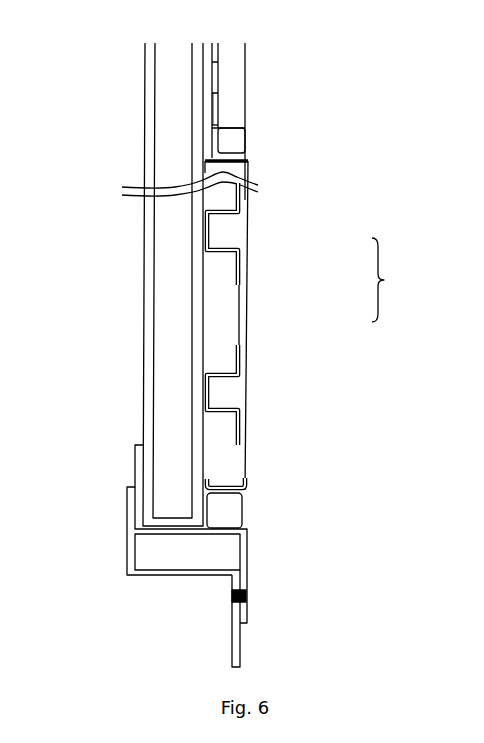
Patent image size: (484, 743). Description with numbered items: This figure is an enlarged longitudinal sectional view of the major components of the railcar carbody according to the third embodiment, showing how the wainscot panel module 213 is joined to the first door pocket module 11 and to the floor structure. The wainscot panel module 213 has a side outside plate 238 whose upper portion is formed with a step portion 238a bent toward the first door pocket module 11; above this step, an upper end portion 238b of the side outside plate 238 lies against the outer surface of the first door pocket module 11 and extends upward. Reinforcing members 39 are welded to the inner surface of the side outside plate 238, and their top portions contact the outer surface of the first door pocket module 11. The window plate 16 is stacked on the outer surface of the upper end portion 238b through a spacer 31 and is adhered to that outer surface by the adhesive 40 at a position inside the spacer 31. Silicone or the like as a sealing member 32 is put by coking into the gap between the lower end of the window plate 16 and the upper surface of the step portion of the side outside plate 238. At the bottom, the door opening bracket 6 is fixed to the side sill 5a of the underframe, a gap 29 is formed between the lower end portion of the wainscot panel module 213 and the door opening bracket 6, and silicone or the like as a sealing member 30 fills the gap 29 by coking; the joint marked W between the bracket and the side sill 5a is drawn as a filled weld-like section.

The first door pocket module 11 is at (143, 283).
The window plate 16 is at (235, 79).
The adhesive 40 is at (217, 72).
The spacer 31 is at (213, 103).
The sealing member 32 is at (236, 143).
The step portion 238a is at (245, 178).
The upper end portion 238b is at (203, 131).
The side outside plate 238 is at (248, 323).
The reinforcing member 39 is at (238, 238).
The wainscot panel module 213 is at (399, 280).
The gap 29 is at (246, 490).
The sealing member 30 is at (234, 512).
The door opening bracket 6 is at (247, 557).
The side sill 5a is at (232, 638).
The welded portion W is at (246, 598).